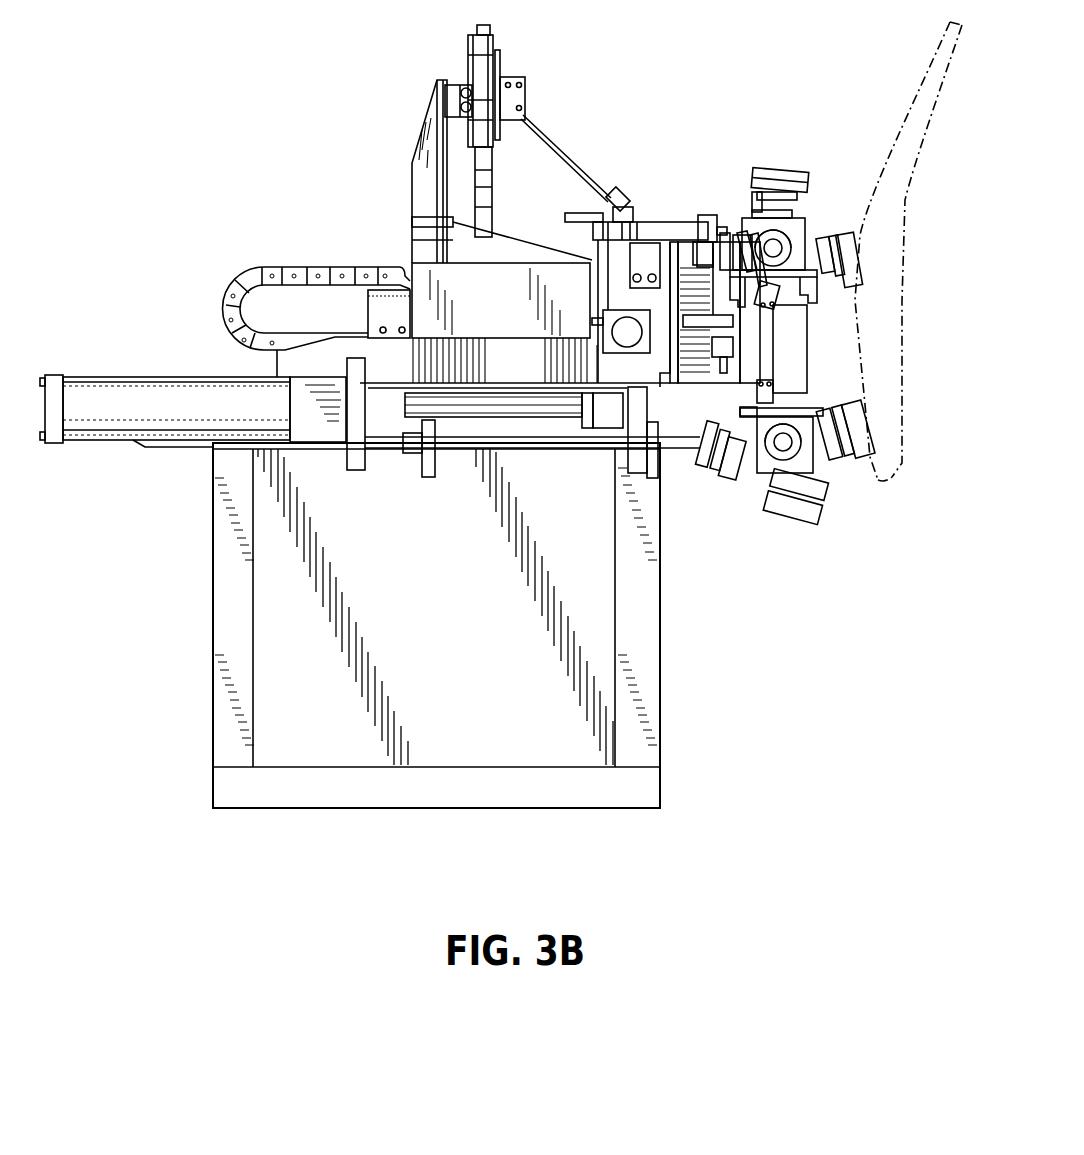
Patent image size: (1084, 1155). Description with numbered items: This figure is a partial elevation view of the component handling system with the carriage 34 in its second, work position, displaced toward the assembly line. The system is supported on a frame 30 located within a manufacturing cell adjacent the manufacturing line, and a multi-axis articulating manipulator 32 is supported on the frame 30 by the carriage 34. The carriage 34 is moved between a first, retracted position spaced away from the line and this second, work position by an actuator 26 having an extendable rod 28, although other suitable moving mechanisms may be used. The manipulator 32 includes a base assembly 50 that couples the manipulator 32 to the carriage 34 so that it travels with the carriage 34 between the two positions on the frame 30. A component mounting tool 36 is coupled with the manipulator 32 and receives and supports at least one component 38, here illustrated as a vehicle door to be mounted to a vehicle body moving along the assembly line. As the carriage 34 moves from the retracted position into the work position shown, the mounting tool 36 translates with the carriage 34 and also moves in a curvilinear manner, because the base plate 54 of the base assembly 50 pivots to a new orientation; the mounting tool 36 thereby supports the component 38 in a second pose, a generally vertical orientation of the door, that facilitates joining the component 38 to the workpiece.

The actuator 26 is at (211, 374).
The extendable rod 28 is at (467, 418).
The frame 30 is at (200, 612).
The multi-axis articulating manipulator 32 is at (580, 131).
The carriage 34 is at (336, 242).
The component mounting tool 36 is at (824, 209).
The component 38 is at (913, 117).
The base assembly 50 is at (413, 139).
The base plate 54 is at (445, 77).